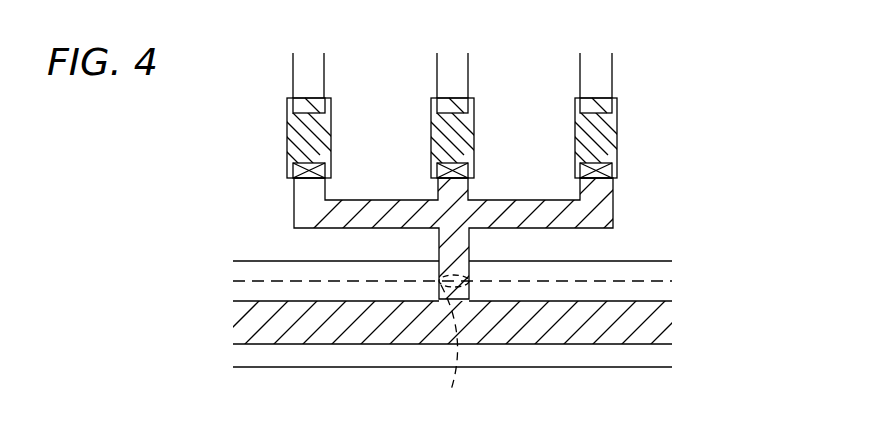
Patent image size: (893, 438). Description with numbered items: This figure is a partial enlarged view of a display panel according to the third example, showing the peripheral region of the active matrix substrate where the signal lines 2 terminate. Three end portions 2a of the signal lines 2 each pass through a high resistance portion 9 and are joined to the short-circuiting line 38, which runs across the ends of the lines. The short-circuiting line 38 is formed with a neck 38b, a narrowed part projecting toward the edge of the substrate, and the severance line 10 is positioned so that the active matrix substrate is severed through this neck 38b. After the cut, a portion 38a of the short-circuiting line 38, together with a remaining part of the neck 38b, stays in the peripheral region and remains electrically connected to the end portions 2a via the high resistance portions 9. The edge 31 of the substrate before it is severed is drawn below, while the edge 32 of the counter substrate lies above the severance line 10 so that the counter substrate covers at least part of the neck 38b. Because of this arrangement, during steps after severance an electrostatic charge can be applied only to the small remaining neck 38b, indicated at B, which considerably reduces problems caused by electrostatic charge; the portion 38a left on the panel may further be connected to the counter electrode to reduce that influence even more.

The signal lines 2 is at (719, 30).
The end portions of the signal lines 2a is at (607, 70).
The high resistance portion 9 is at (613, 135).
The severance line 10 is at (638, 281).
The edge of the substrate before severance 31 is at (288, 368).
The edge of the counter substrate 32 is at (243, 261).
The short-circuiting line 38 is at (663, 333).
The portion of the short-circuiting line 38a is at (679, 175).
The neck 38b is at (482, 297).
The neck region B is at (449, 349).